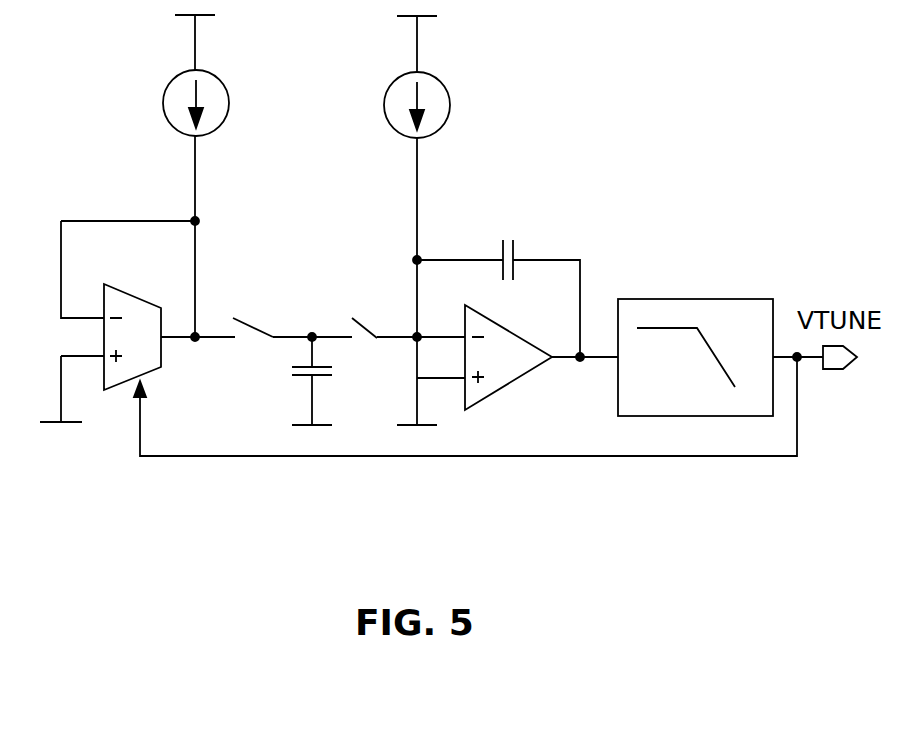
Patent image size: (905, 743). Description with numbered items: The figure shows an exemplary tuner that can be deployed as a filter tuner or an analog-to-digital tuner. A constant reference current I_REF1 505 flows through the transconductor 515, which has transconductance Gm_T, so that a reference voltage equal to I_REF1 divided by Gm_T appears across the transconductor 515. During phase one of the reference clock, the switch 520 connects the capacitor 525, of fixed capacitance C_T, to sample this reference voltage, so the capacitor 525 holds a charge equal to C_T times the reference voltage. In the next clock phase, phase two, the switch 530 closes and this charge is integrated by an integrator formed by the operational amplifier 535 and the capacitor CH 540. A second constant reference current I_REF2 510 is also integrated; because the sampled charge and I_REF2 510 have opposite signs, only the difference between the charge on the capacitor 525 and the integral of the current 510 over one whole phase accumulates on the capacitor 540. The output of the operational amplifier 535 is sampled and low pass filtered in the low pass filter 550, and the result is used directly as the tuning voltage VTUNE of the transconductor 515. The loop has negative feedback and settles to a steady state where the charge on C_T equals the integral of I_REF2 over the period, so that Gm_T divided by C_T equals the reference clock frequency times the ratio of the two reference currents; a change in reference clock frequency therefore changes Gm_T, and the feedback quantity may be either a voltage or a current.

The reference current I_REF1 505 is at (215, 72).
The reference current I_REF2 510 is at (438, 74).
The transconductor 515 is at (160, 360).
The switch 520 is at (250, 328).
The capacitor 525 is at (325, 378).
The switch 530 is at (370, 330).
The operational amplifier 535 is at (500, 390).
The capacitor CH 540 is at (515, 245).
The low pass filter 550 is at (686, 298).